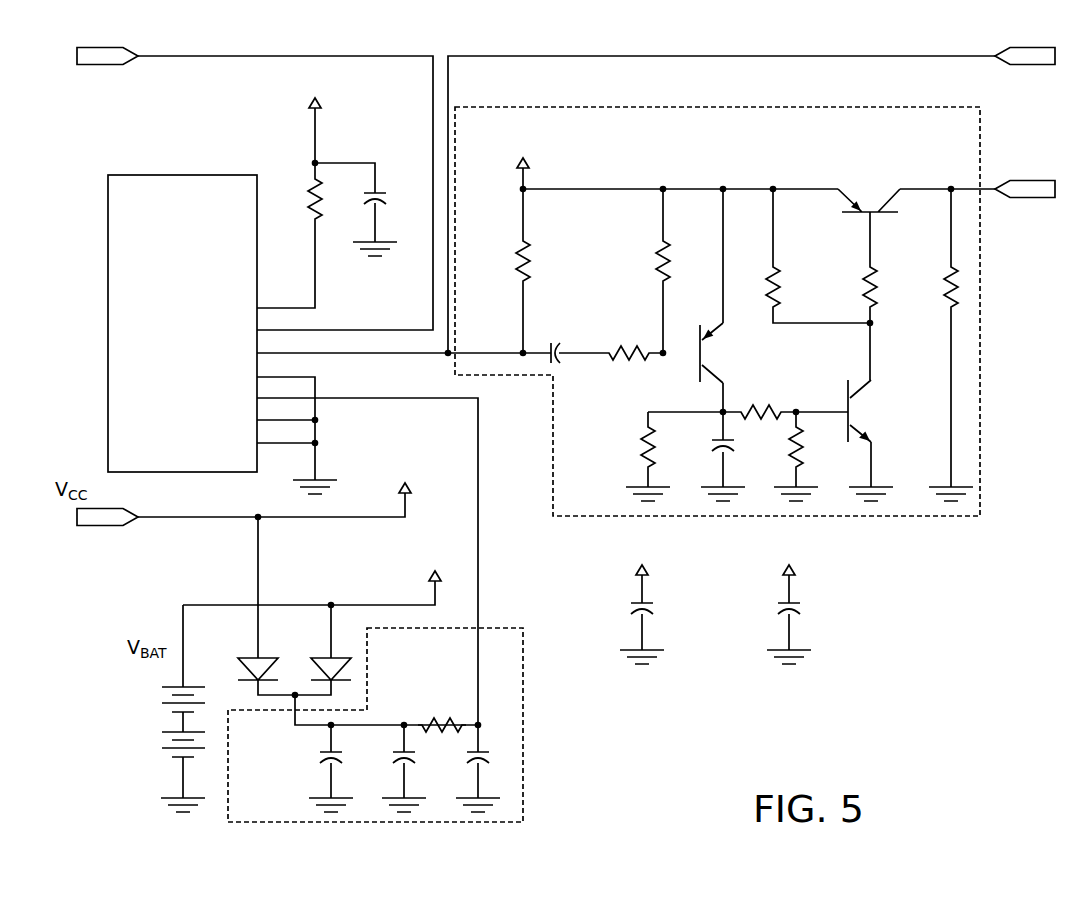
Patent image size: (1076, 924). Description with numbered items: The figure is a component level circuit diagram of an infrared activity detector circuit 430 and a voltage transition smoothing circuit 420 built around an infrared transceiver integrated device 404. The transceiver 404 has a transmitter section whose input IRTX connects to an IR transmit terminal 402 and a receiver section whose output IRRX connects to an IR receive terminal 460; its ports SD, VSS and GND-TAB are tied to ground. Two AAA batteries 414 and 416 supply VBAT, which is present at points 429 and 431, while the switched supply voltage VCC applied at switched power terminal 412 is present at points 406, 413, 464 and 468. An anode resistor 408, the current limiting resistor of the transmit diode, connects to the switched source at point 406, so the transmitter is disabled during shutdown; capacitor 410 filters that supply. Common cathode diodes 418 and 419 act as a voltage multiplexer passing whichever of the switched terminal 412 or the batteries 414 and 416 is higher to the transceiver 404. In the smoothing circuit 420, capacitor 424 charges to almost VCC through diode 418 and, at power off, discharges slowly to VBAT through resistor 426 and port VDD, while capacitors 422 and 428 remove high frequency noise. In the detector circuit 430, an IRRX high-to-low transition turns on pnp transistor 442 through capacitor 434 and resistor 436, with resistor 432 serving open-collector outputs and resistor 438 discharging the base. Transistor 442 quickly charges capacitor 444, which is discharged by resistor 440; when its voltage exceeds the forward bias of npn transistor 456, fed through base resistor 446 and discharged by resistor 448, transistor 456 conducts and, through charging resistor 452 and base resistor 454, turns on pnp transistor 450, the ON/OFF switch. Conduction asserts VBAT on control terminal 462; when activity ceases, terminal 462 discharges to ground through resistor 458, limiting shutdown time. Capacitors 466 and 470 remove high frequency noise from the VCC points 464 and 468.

The IR transmit terminal 402 is at (108, 66).
The infrared transceiver integrated device 404 is at (165, 247).
The switched power source point 406 is at (308, 104).
The anode resistor 408 is at (304, 184).
The capacitor 410 is at (378, 190).
The switched power terminal 412 is at (108, 527).
The VCC point 413 is at (402, 486).
The battery 414 is at (168, 694).
The battery 416 is at (168, 740).
The diode 418 is at (256, 657).
The diode 419 is at (330, 657).
The voltage transition smoothing circuit 420 is at (417, 661).
The capacitor 422 is at (323, 762).
The capacitor 424 is at (397, 762).
The resistor 426 is at (433, 722).
The capacitor 428 is at (471, 762).
The VBAT point 429 is at (432, 578).
The IR activity detector circuit 430 is at (702, 141).
The VBAT point 431 is at (518, 165).
The resistor 432 is at (518, 250).
The capacitor 434 is at (560, 343).
The resistor 436 is at (620, 346).
The resistor 438 is at (658, 252).
The resistor 440 is at (643, 452).
The pnp transistor 442 is at (708, 357).
The capacitor 444 is at (717, 450).
The resistor 446 is at (752, 413).
The resistor 448 is at (790, 450).
The pnp transistor 450 is at (860, 202).
The resistor 452 is at (780, 292).
The resistor 454 is at (866, 290).
The npn transistor 456 is at (868, 420).
The resistor 458 is at (947, 292).
The IR receive terminal 460 is at (1020, 66).
The control terminal 462 is at (1020, 199).
The VCC point 464 is at (638, 563).
The capacitor 466 is at (636, 606).
The VCC point 468 is at (785, 563).
The capacitor 470 is at (783, 606).